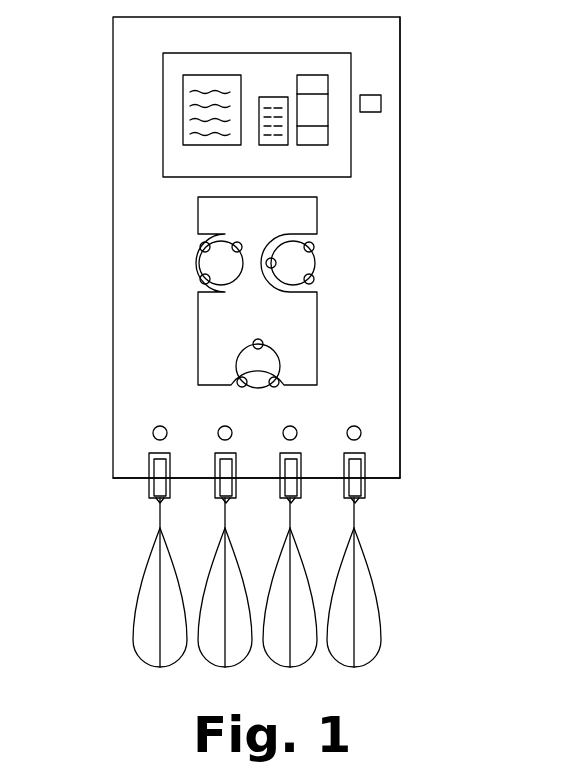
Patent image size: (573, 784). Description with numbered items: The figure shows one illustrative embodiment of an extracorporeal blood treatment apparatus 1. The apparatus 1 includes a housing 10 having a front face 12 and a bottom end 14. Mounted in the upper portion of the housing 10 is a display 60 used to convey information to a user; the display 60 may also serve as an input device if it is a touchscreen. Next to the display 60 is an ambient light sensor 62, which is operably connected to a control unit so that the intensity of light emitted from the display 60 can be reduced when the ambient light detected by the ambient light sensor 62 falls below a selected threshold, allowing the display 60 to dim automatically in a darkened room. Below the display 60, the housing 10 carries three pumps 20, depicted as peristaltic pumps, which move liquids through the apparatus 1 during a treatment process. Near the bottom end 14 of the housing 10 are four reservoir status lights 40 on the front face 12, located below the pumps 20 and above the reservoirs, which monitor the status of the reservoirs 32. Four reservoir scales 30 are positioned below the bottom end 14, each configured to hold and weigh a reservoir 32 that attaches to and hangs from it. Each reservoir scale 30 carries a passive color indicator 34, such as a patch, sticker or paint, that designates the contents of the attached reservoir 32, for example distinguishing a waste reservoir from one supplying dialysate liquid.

The extracorporeal blood treatment apparatus 1 is at (481, 81).
The housing 10 is at (400, 306).
The front face 12 is at (380, 193).
The bottom end 14 is at (133, 478).
The pump 20 is at (220, 262).
The reservoir scale 30 is at (222, 500).
The reservoir 32 is at (203, 658).
The passive color indicator 34 is at (215, 453).
The reservoir status light 40 is at (225, 426).
The display 60 is at (163, 113).
The ambient light sensor 62 is at (381, 103).